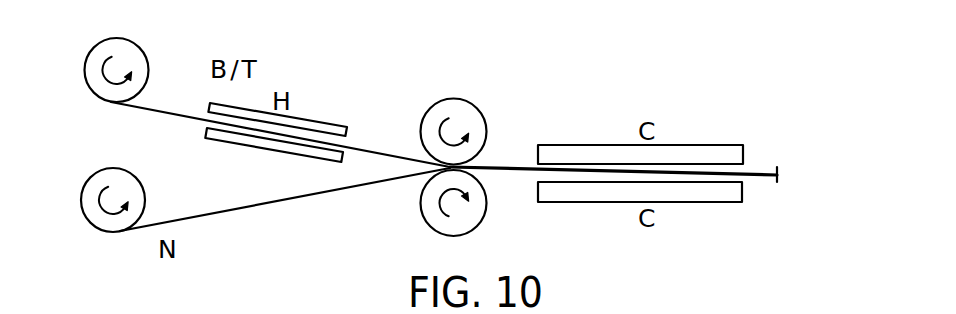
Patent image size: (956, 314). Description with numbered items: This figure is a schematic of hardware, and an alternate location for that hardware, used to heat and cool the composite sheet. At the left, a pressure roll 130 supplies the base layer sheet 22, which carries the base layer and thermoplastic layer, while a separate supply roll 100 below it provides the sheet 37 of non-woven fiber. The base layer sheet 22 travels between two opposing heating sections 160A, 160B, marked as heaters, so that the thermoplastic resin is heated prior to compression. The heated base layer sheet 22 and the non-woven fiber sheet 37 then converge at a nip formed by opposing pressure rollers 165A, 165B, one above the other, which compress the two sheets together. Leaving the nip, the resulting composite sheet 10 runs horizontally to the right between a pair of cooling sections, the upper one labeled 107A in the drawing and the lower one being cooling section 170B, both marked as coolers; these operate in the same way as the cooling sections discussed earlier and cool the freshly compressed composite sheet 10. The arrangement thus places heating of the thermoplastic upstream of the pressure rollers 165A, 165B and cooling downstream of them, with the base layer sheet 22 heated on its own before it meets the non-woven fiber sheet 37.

The pressure roll 130 is at (88, 53).
The supply roll 100 is at (83, 187).
The base layer sheet 22 is at (162, 112).
The sheet of non-woven fiber 37 is at (247, 206).
The heating section 160A is at (332, 122).
The heating section 160B is at (265, 152).
The pressure roller 165A is at (455, 99).
The pressure roller 165B is at (426, 224).
The composite sheet 10 is at (510, 167).
The upper cooling plate 107A is at (700, 147).
The cooling section 170B is at (690, 203).